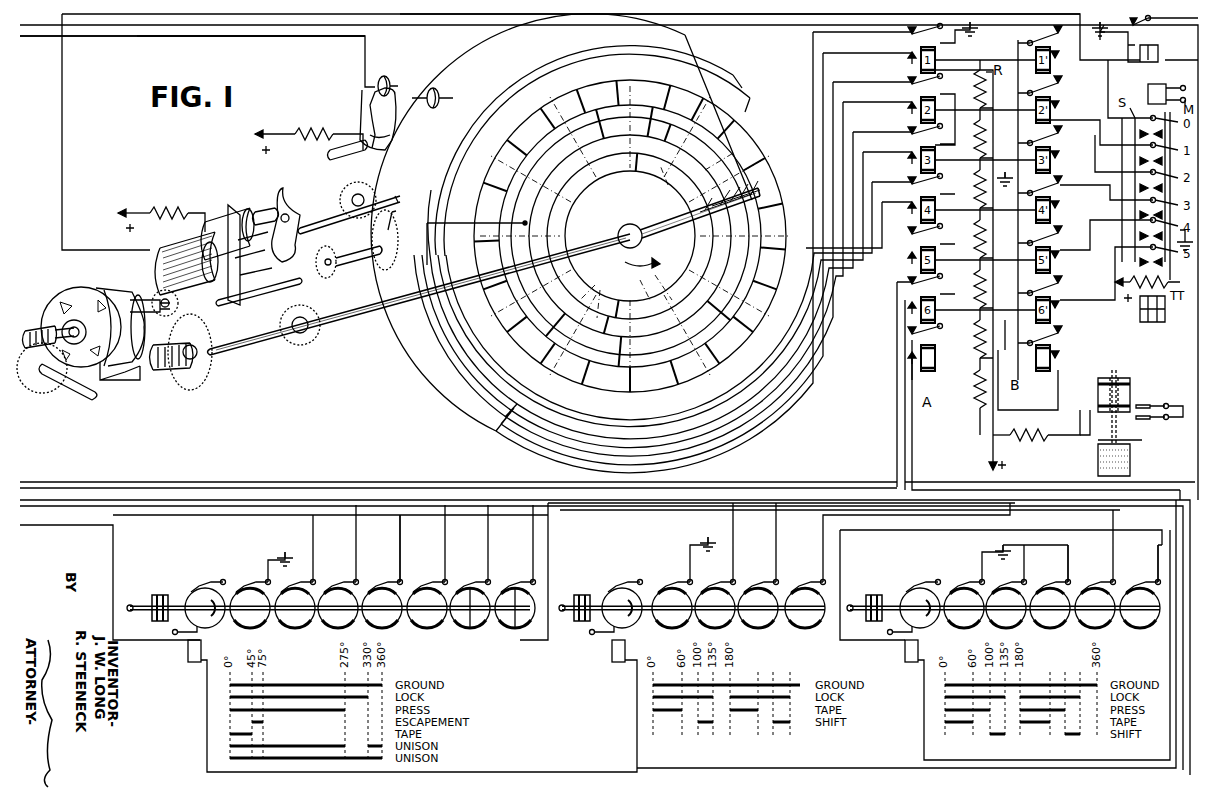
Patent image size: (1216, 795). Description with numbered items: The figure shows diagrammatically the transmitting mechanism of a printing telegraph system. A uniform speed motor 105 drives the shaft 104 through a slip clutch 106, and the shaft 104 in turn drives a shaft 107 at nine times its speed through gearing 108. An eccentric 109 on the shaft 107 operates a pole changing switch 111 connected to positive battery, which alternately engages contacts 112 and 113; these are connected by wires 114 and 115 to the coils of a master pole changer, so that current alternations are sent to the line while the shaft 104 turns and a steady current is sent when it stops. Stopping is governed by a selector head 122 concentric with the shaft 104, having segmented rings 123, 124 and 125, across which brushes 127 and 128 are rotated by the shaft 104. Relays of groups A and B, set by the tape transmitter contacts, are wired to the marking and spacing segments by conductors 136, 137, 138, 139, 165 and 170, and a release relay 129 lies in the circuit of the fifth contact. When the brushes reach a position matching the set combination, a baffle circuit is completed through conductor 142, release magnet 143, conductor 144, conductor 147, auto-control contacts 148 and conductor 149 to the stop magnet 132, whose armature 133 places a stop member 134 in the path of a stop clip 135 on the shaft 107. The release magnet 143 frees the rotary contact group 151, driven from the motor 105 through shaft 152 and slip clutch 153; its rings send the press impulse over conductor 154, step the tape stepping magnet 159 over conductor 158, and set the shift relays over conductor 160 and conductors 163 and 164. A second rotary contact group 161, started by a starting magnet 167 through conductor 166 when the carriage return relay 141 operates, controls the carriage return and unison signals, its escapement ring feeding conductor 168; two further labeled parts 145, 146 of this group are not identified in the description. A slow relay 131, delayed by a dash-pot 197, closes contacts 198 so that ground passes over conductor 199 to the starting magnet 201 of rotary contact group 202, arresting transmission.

The shaft 104 is at (300, 340).
The uniform speed motor 105 is at (90, 288).
The slip clutch 106 is at (178, 370).
The shaft 107 is at (325, 220).
The gearing 108 is at (335, 236).
The eccentric 109 is at (380, 170).
The pole changing switch 111 is at (402, 120).
The contact 112 is at (384, 76).
The contact 113 is at (432, 88).
The wire 114 is at (95, 36).
The wire 115 is at (137, 26).
The selector head 122 is at (650, 192).
The ring 123 is at (684, 177).
The ring 124 is at (599, 292).
The ring 125 is at (652, 283).
The brush 127 is at (665, 232).
The brush 128 is at (758, 190).
The release relay 129 is at (1050, 360).
The slow relay 131 is at (1130, 385).
The stop magnet 132 is at (213, 248).
The armature 133 is at (240, 290).
The stop member 134 is at (290, 270).
The stop clip 135 is at (282, 190).
The conductor 136 is at (750, 98).
The conductor 137 is at (845, 110).
The conductor 138 is at (855, 138).
The conductor 139 is at (895, 198).
The carriage return relay 141 is at (933, 360).
The conductor 142 is at (1045, 490).
The release magnet 143 is at (905, 650).
The conductor 144 is at (630, 510).
The cam switch 145 is at (525, 620).
The cam switch 146 is at (480, 620).
The conductor 147 is at (113, 575).
The auto-control contacts 148 is at (1145, 95).
The conductor 149 is at (770, 14).
The rotary contact group 151 is at (1001, 579).
The shaft 152 is at (78, 392).
The slip clutch 153 is at (874, 595).
The conductor 154 is at (1068, 555).
The conductor 158 is at (1155, 508).
The tape stepping magnet 159 is at (1160, 312).
The conductor 160 is at (1130, 540).
The second rotary contact group 161 is at (331, 576).
The conductor 163 is at (66, 482).
The conductor 164 is at (118, 488).
The conductor 165 is at (685, 35).
The conductor 166 is at (950, 470).
The starting magnet 167 is at (188, 650).
The conductor 168 is at (400, 545).
The conductor 170 is at (733, 75).
The dash-pot 197 is at (1130, 460).
The contacts 198 is at (1140, 420).
The conductor 199 is at (878, 768).
The starting magnet 201 is at (612, 650).
The rotary contact group 202 is at (784, 575).